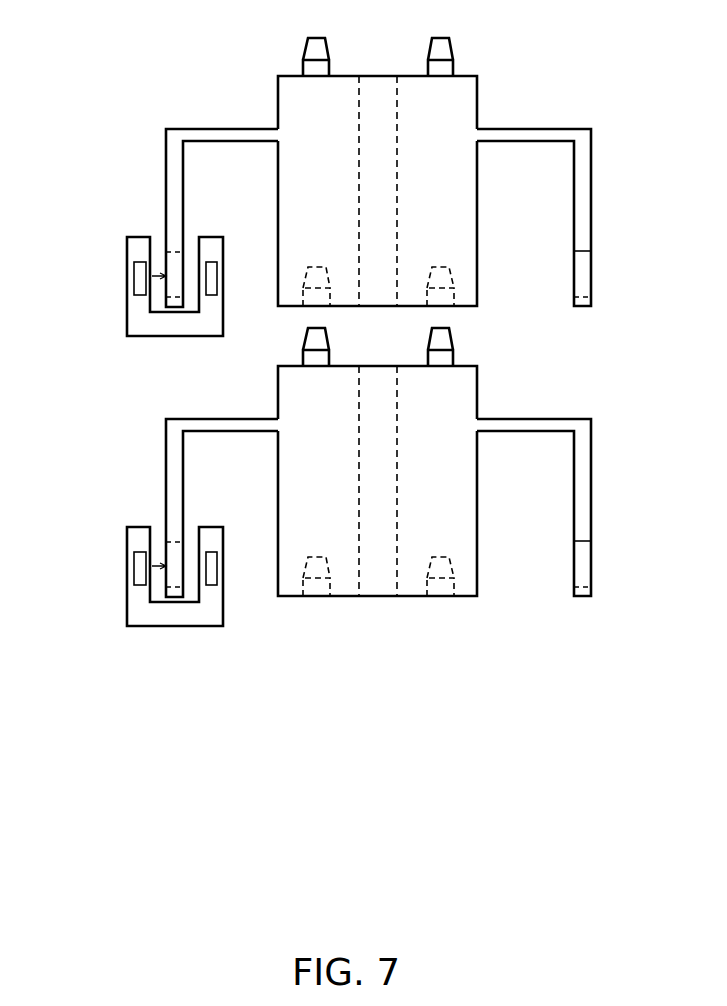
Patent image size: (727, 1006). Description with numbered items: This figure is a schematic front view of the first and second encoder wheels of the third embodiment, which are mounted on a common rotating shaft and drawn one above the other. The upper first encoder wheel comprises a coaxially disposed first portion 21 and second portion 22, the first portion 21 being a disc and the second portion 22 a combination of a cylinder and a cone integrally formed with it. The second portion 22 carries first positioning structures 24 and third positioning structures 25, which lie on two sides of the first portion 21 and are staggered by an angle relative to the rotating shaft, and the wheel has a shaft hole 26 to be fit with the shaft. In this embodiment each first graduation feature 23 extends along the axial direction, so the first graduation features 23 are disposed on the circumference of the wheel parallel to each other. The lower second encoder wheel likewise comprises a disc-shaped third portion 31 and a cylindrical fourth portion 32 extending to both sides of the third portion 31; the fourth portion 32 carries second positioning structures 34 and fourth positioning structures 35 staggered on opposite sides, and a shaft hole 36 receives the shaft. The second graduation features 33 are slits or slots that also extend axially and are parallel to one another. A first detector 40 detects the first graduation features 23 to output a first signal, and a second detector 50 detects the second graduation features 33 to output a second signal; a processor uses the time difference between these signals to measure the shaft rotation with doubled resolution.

The first portion 21 is at (584, 206).
The second portion 22 is at (474, 101).
The first graduation features 23 is at (582, 252).
The first positioning structures 24 is at (443, 266).
The third positioning structures 25 is at (447, 44).
The shaft hole 26 is at (357, 147).
The third portion 31 is at (586, 464).
The fourth portion 32 is at (474, 397).
The second graduation features 33 is at (582, 542).
The second positioning structures 34 is at (447, 338).
The fourth positioning structures 35 is at (443, 556).
The shaft hole 36 is at (357, 457).
The first detector 40 is at (127, 281).
The second detector 50 is at (127, 588).